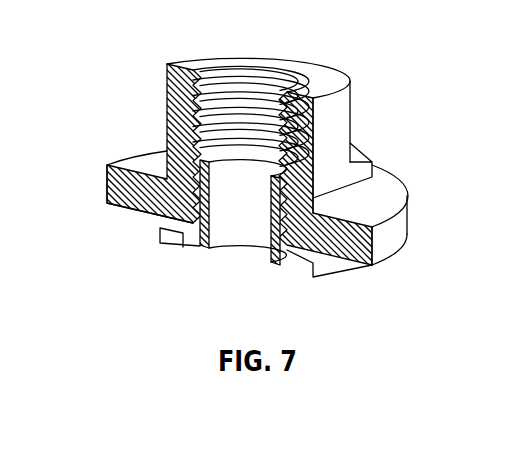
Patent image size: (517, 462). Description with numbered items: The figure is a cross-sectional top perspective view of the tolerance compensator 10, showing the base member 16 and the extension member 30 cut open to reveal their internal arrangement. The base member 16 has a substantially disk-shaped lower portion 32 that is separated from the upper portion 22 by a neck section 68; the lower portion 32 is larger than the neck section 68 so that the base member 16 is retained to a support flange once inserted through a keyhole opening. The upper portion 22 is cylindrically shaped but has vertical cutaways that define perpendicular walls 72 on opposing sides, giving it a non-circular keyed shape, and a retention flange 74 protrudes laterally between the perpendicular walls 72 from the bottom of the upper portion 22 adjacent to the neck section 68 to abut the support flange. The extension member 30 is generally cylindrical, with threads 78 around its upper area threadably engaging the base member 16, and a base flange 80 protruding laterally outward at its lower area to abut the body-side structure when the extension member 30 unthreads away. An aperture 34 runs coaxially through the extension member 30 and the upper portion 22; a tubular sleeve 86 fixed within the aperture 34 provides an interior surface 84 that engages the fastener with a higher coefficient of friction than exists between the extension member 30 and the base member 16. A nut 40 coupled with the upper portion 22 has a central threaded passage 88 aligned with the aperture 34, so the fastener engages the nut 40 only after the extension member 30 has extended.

The tolerance compensator 10 is at (128, 43).
The base member 16 is at (178, 123).
The upper portion 22 is at (328, 83).
The extension member 30 is at (163, 243).
The lower portion 32 is at (393, 235).
The aperture 34 is at (231, 246).
The nut 40 is at (287, 77).
The neck section 68 is at (372, 200).
The perpendicular walls 72 is at (337, 130).
The retention flange 74 is at (360, 153).
The threads 78 is at (128, 208).
The base flange 80 is at (337, 263).
The interior surface 84 is at (253, 232).
The sleeve 86 is at (275, 268).
The central threaded passage 88 is at (228, 90).